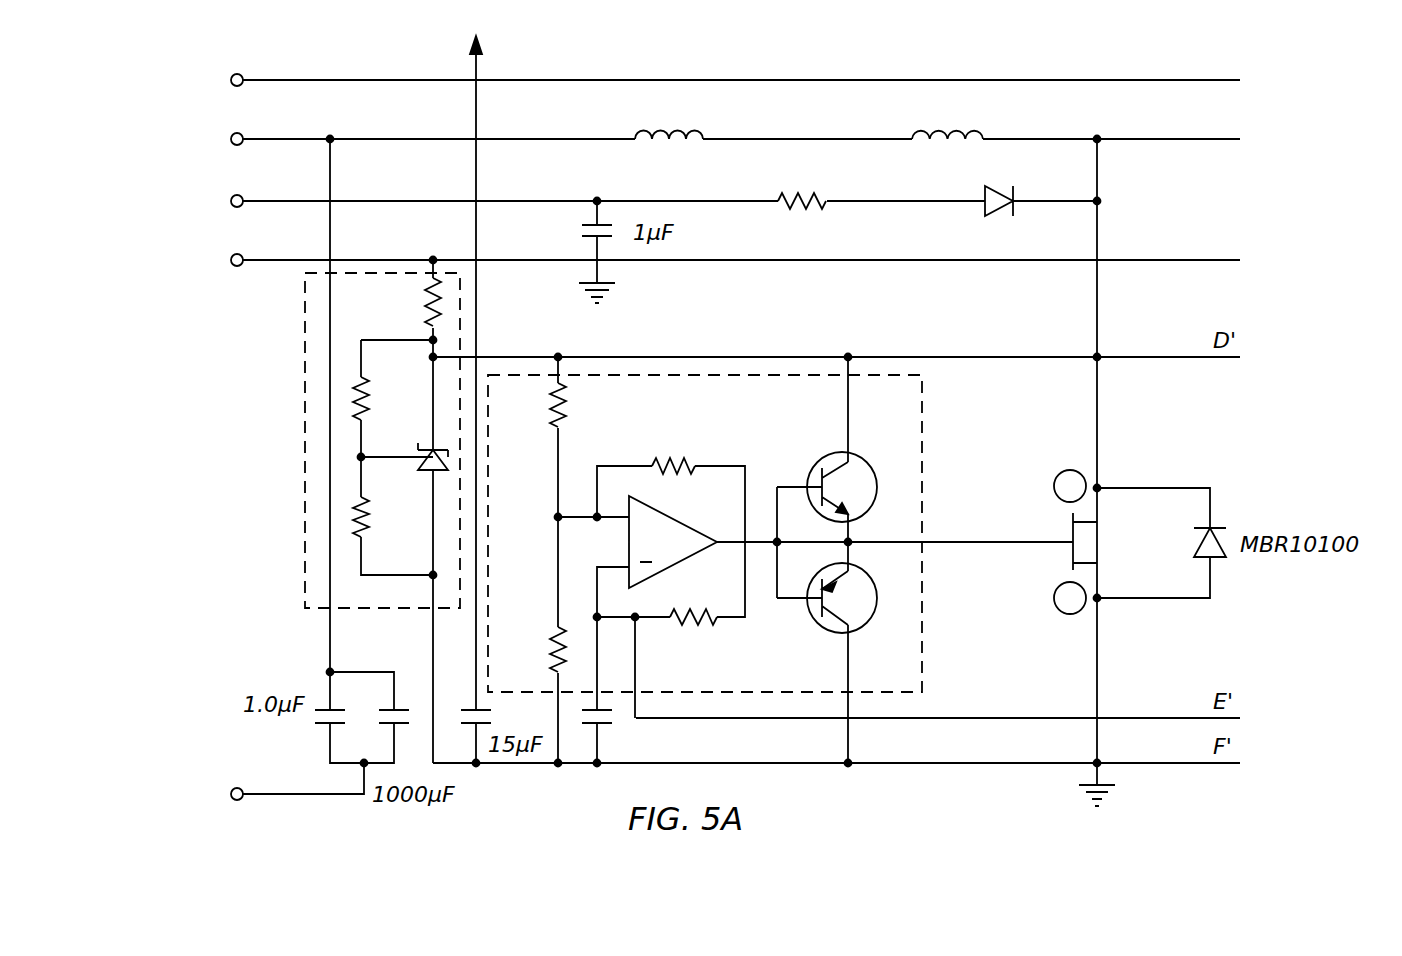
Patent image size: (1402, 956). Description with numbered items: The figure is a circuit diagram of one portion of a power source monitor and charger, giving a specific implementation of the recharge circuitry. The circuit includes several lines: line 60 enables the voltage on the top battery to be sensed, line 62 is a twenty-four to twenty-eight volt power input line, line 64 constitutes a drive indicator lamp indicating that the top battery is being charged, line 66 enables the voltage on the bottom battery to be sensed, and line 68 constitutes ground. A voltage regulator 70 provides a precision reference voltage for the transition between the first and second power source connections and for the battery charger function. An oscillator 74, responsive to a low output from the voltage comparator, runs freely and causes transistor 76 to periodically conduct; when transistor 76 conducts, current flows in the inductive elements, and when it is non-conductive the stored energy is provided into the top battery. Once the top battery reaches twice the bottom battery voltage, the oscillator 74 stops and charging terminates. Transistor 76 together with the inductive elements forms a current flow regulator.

The line 60 is at (265, 77).
The line 62 is at (270, 137).
The line 64 is at (262, 201).
The line 66 is at (267, 263).
The line 68 is at (282, 793).
The voltage regulator 70 is at (303, 455).
The oscillator 74 is at (923, 605).
The transistor 76 is at (1103, 545).